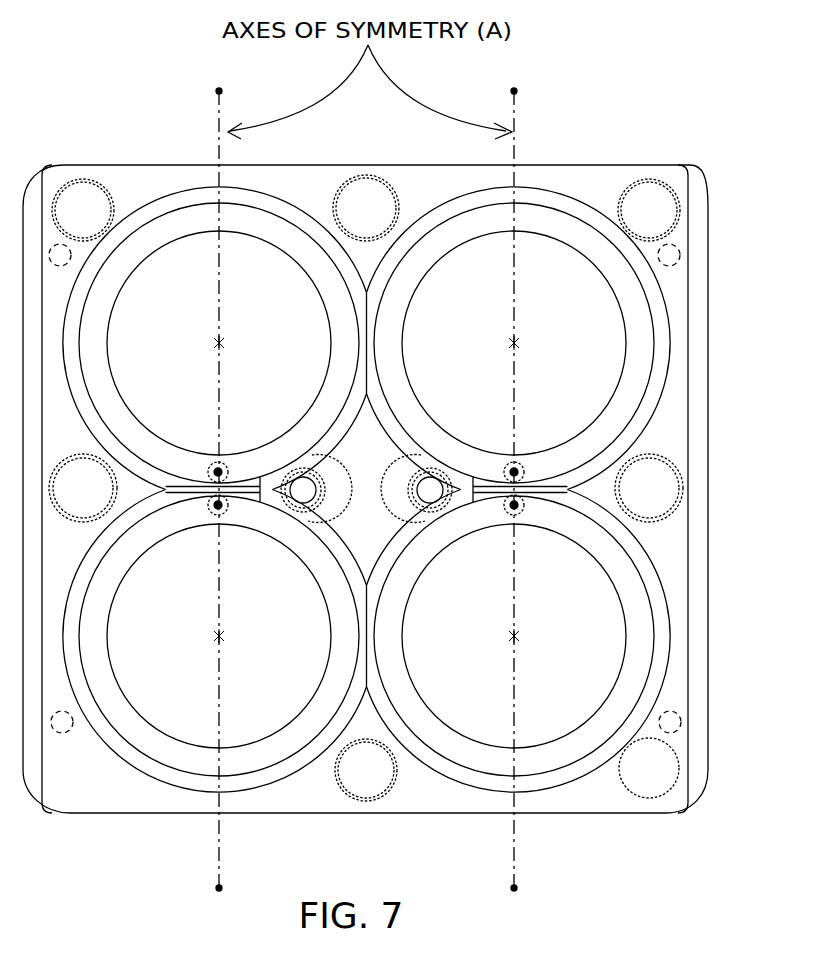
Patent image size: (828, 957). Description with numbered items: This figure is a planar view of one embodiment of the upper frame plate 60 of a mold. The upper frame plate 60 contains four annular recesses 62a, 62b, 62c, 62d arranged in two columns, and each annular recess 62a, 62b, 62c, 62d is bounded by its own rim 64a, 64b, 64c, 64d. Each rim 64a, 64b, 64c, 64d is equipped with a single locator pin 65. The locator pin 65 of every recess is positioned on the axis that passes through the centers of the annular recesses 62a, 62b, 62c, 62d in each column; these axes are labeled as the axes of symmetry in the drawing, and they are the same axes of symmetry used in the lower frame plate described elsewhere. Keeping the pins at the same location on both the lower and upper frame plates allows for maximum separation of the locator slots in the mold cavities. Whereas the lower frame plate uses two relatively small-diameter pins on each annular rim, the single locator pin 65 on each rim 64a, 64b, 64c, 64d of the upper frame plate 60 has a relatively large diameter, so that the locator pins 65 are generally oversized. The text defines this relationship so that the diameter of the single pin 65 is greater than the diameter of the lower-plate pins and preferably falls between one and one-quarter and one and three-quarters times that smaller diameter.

The upper frame plate 60 is at (644, 134).
The annular recess 62a is at (569, 344).
The annular recess 62b is at (569, 647).
The annular recess 62c is at (170, 639).
The annular recess 62d is at (170, 356).
The rim 64a is at (592, 432).
The rim 64b is at (597, 733).
The rim 64c is at (140, 733).
The rim 64d is at (138, 438).
The locator pin 65 is at (215, 469).